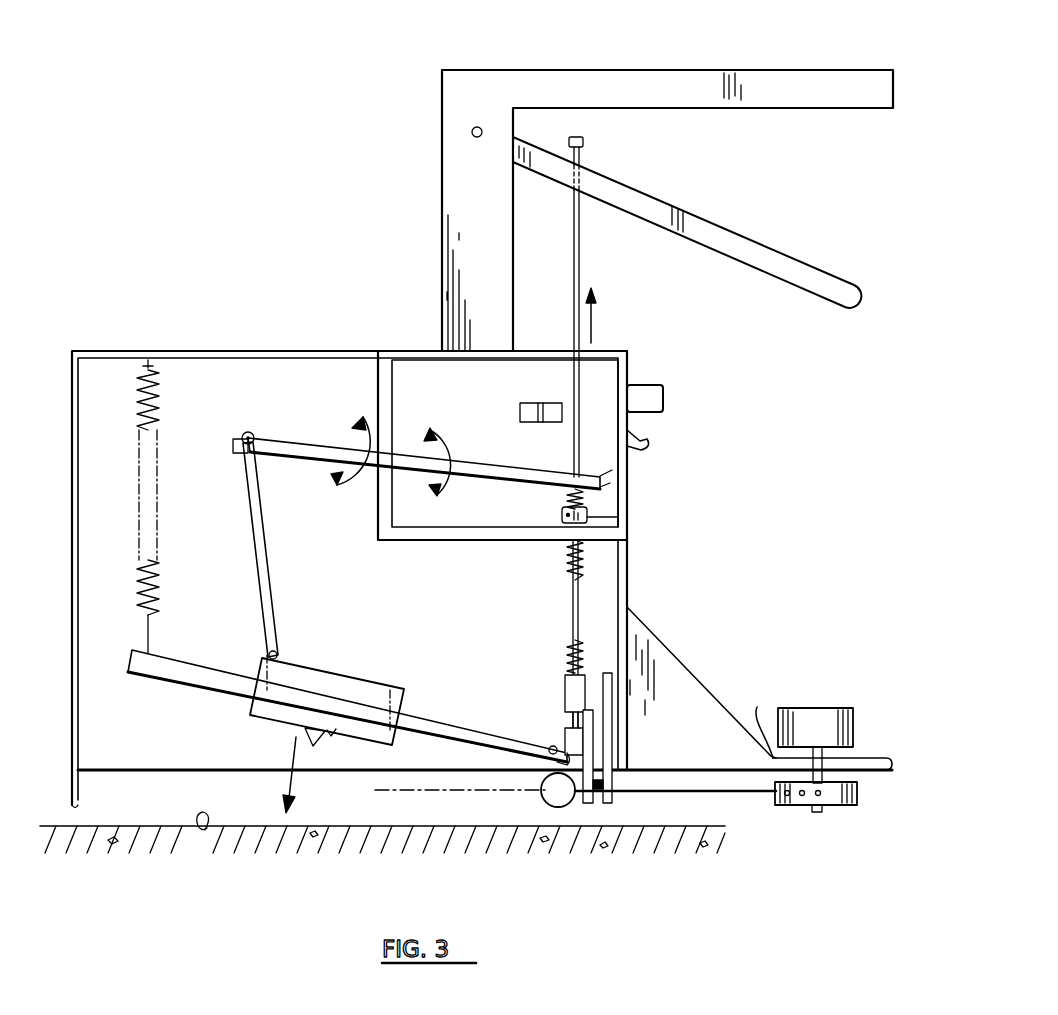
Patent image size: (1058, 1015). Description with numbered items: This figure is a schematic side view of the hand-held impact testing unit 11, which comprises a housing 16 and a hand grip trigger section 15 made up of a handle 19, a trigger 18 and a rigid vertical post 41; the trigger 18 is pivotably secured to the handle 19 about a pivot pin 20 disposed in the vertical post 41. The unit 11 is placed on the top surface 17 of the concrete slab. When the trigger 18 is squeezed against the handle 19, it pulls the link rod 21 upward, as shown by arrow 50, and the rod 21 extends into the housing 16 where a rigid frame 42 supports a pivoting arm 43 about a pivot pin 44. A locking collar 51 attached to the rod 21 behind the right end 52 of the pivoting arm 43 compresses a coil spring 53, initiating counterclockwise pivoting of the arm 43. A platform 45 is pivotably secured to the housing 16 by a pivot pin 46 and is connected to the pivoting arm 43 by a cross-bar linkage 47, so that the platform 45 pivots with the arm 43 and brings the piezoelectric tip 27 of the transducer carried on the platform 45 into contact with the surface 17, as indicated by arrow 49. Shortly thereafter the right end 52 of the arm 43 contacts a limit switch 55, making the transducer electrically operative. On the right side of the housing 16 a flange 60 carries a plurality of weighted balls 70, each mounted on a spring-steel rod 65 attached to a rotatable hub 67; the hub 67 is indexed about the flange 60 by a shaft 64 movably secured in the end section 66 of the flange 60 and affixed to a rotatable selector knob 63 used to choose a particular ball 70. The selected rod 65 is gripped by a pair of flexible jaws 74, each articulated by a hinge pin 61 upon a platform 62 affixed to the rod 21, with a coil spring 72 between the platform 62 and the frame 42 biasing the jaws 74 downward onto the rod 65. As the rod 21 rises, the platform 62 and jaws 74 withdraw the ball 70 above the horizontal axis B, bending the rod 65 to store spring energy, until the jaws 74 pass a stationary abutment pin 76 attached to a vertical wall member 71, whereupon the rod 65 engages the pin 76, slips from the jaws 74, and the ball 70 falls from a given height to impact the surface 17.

The hand-held unit 11 is at (795, 414).
The trigger 15 is at (797, 192).
The housing 16 is at (628, 580).
The top surface 17 is at (205, 832).
The trigger 18 is at (792, 252).
The handle 19 is at (692, 72).
The pivot pin 20 is at (470, 132).
The link rod 21 is at (581, 270).
The piezoelectric tip 27 is at (333, 737).
The rigid vertical post 41 is at (452, 236).
The rigid frame 42 is at (378, 531).
The pivoting arm 43 is at (484, 477).
The pivot pin 44 is at (390, 458).
The platform 45 is at (194, 665).
The pivot pin 46 is at (550, 757).
The cross-bar linkage 47 is at (277, 607).
The arrow 49 is at (292, 740).
The arrow 50 is at (593, 327).
The locking collar 51 is at (595, 516).
The right end 52 is at (604, 478).
The coil spring 53 is at (583, 496).
The limit switch 55 is at (535, 403).
The flange 60 is at (672, 672).
The hinge pin 61 is at (567, 719).
The platform 62 is at (567, 690).
The selector knob 63 is at (812, 716).
The shaft 64 is at (751, 719).
The spring-steel rod 65 is at (688, 795).
The end section 66 is at (872, 760).
The rotatable hub 67 is at (854, 800).
The weighted ball 70 is at (562, 808).
The vertical wall member 71 is at (612, 790).
The coil spring 72 is at (570, 616).
The flexible jaws 74 is at (591, 742).
The abutment pin 76 is at (603, 782).
The horizontal axis B is at (428, 787).